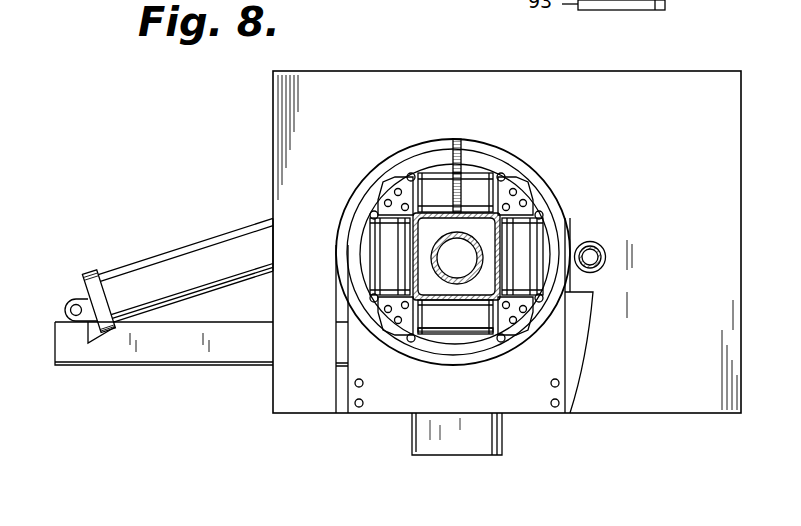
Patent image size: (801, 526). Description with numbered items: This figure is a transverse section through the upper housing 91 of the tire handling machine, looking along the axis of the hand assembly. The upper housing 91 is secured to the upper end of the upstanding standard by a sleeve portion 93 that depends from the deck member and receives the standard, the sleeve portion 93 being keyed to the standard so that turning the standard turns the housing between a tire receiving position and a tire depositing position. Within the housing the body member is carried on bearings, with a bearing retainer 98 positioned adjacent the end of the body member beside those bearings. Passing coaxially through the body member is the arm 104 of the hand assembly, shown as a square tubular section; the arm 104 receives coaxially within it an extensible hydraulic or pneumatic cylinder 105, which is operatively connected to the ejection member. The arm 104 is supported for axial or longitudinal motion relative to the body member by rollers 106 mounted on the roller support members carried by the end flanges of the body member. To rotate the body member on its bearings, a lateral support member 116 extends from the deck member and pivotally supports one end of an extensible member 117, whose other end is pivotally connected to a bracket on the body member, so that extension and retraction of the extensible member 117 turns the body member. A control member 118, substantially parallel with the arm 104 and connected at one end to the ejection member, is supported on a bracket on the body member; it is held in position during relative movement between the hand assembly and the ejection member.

The upper housing 91 is at (741, 117).
The sleeve portion 93 is at (503, 431).
The bearing retainer 98 is at (482, 168).
The arm 104 is at (447, 302).
The hydraulic or pneumatic cylinder 105 is at (482, 246).
The rollers 106 is at (368, 258).
The lateral support member 116 is at (240, 342).
The extensible member 117 is at (176, 252).
The control member 118 is at (592, 272).